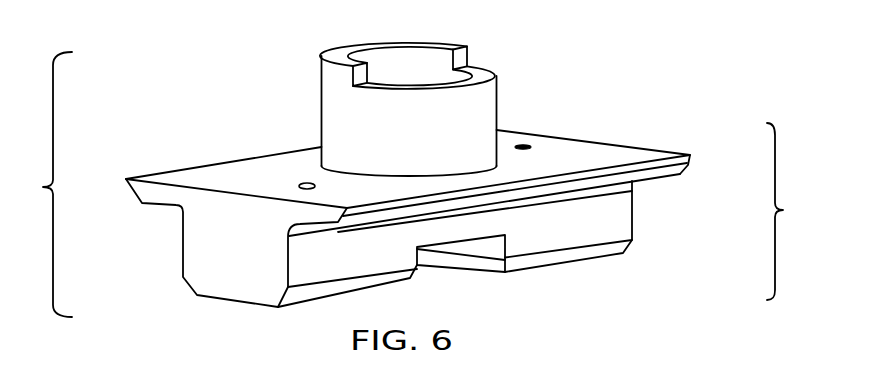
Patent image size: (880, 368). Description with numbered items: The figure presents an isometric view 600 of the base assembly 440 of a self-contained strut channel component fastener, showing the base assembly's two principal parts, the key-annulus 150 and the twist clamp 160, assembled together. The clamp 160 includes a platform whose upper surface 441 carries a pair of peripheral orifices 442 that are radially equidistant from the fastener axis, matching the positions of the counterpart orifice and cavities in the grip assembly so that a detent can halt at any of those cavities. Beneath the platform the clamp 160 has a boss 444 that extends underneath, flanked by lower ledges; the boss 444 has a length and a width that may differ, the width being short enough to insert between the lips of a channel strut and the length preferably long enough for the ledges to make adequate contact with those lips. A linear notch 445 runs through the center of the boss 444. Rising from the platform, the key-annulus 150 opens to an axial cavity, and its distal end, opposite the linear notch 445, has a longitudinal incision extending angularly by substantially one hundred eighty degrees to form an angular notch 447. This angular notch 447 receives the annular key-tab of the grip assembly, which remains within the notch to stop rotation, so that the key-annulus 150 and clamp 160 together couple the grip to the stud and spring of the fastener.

The isometric view 600 is at (752, 70).
The base assembly 440 is at (43, 187).
The upper surface 441 is at (584, 153).
The peripheral orifices 442 is at (300, 182).
The boss 444 is at (182, 278).
The linear notch 445 is at (462, 247).
The key-annulus 150 is at (335, 113).
The angular notch 447 is at (487, 77).
The twist clamp 160 is at (790, 211).